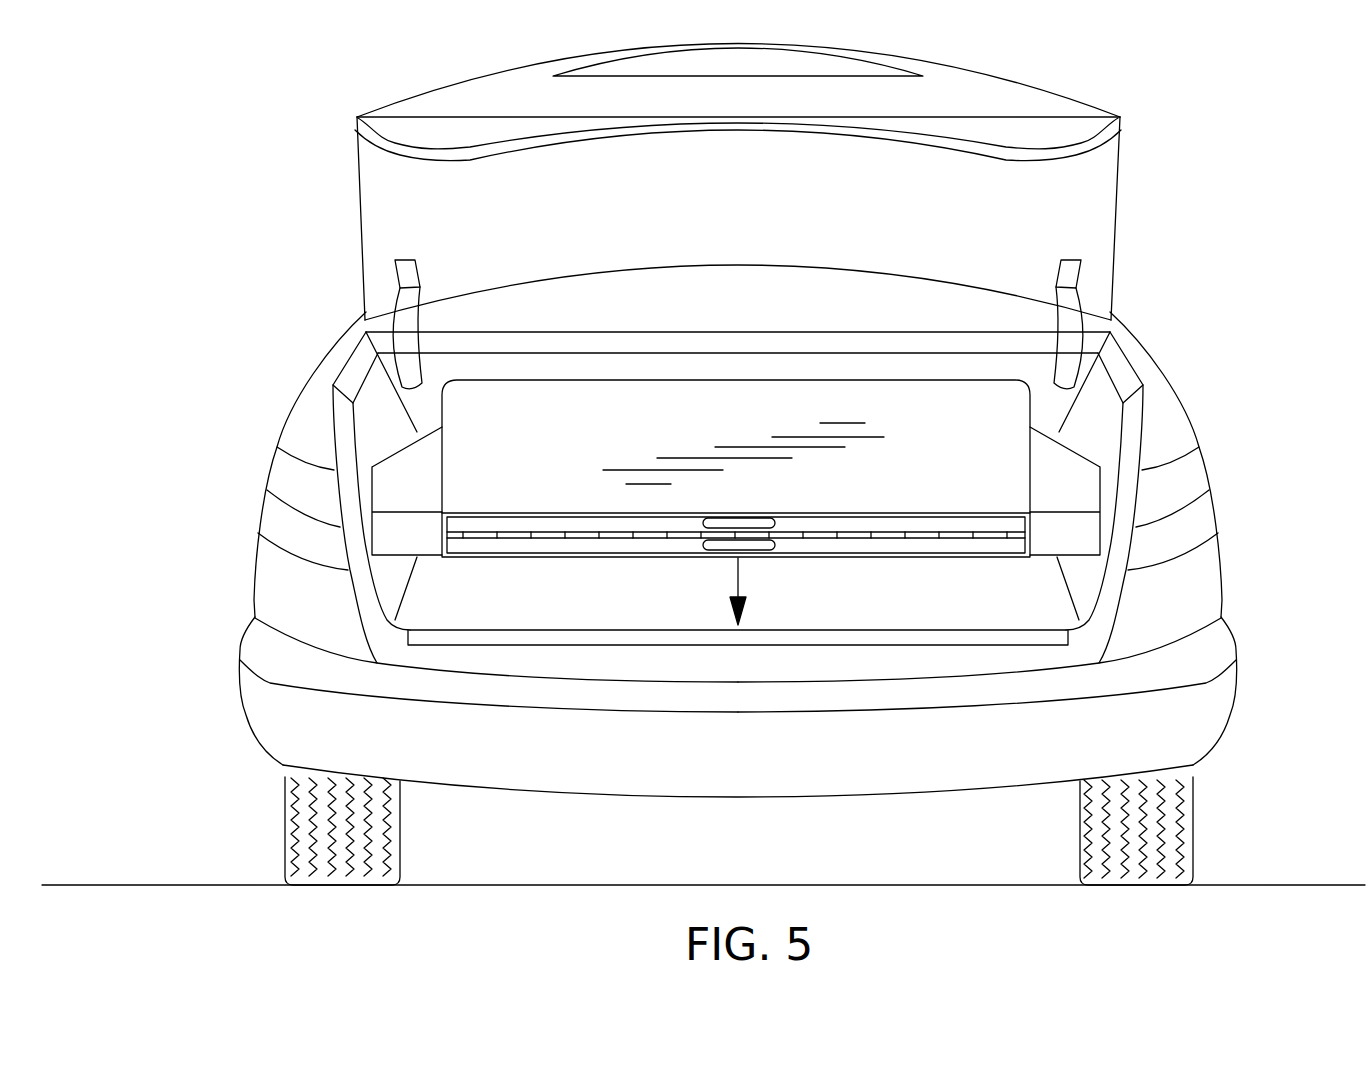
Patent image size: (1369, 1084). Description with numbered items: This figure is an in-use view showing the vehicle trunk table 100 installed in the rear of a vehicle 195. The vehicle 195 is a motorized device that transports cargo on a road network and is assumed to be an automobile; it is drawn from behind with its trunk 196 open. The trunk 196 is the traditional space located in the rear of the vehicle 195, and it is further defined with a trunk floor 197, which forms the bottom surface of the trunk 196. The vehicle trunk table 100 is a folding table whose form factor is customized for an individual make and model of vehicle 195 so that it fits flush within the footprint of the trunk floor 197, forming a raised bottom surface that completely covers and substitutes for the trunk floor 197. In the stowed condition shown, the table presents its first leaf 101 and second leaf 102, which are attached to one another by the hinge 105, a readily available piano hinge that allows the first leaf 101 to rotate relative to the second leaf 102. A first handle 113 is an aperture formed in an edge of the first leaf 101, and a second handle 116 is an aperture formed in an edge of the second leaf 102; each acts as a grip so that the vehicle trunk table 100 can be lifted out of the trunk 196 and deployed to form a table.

The vehicle trunk table 100 is at (312, 276).
The first leaf 101 is at (977, 397).
The second leaf 102 is at (930, 548).
The hinge 105 is at (883, 535).
The first handle 113 is at (710, 522).
The second handle 116 is at (760, 545).
The vehicle 195 is at (1197, 587).
The trunk 196 is at (1093, 420).
The trunk floor 197 is at (533, 595).